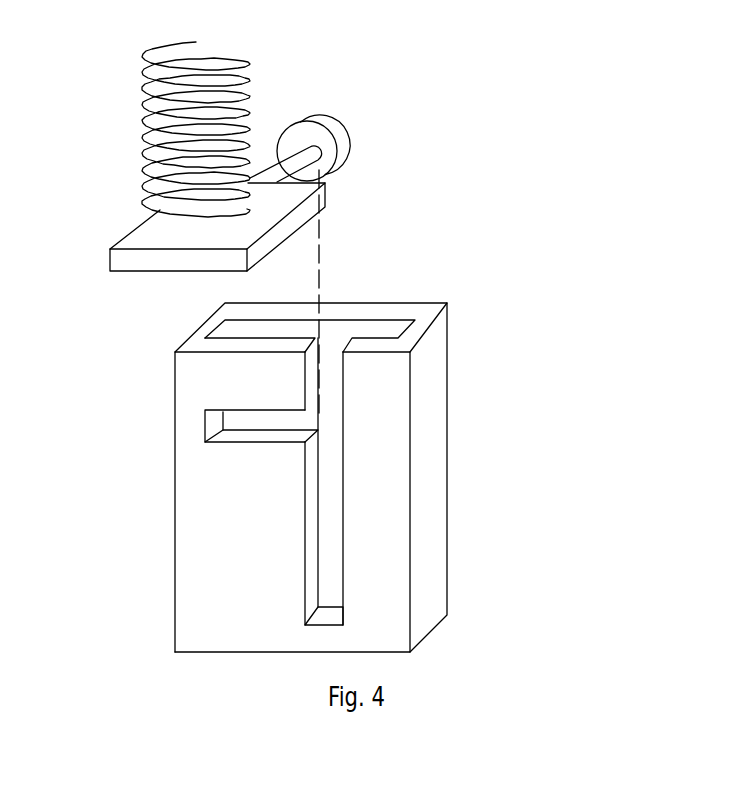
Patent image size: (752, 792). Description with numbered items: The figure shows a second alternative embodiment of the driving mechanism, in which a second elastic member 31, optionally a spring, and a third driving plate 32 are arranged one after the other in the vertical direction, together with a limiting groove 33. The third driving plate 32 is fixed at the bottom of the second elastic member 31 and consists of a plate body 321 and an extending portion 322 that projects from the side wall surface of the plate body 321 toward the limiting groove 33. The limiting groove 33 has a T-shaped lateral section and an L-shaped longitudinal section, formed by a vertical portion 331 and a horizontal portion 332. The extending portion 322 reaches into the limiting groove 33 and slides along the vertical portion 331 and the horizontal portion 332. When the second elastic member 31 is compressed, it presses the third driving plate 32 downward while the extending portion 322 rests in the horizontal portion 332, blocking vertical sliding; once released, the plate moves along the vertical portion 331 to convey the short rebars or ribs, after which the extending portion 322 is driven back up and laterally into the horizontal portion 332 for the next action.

The second elastic member 31 is at (146, 184).
The third driving plate 32 is at (370, 160).
The plate body 321 is at (323, 197).
The extending portion 322 is at (537, 158).
The limiting groove 33 is at (409, 469).
The vertical portion 331 is at (426, 481).
The horizontal portion 332 is at (548, 410).